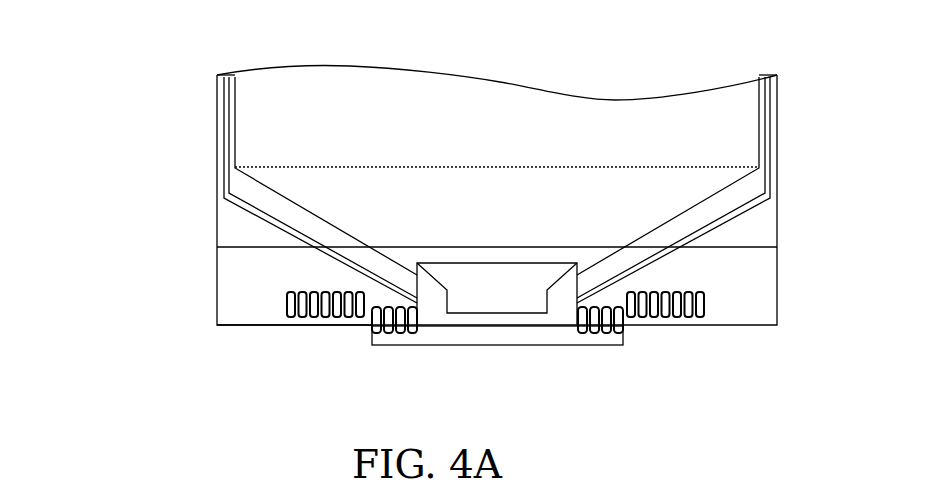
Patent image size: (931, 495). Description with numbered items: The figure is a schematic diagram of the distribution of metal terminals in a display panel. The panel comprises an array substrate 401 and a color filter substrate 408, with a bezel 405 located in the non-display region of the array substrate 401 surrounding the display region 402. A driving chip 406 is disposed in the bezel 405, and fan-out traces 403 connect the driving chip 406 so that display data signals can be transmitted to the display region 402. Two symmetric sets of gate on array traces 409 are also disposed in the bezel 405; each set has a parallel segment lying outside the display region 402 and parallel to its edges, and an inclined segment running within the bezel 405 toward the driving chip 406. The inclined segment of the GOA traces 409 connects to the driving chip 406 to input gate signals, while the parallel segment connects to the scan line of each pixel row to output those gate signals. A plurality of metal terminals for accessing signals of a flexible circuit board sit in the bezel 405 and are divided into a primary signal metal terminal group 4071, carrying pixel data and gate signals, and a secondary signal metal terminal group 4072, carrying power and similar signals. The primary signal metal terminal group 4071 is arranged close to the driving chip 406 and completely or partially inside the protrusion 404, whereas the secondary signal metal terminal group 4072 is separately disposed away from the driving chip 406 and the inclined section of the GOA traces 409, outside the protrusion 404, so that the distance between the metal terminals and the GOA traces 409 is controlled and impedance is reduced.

The array substrate 401 is at (218, 216).
The display region 402 is at (394, 103).
The fan-out traces 403 is at (319, 187).
The protrusion 404 is at (417, 345).
The bezel 405 is at (242, 283).
The driving chip 406 is at (550, 327).
The color filter substrate 408 is at (222, 233).
The gate on array (GOA) traces 409 is at (220, 130).
The primary signal metal terminal group 4071 is at (374, 336).
The secondary signal metal terminal group 4072 is at (310, 318).